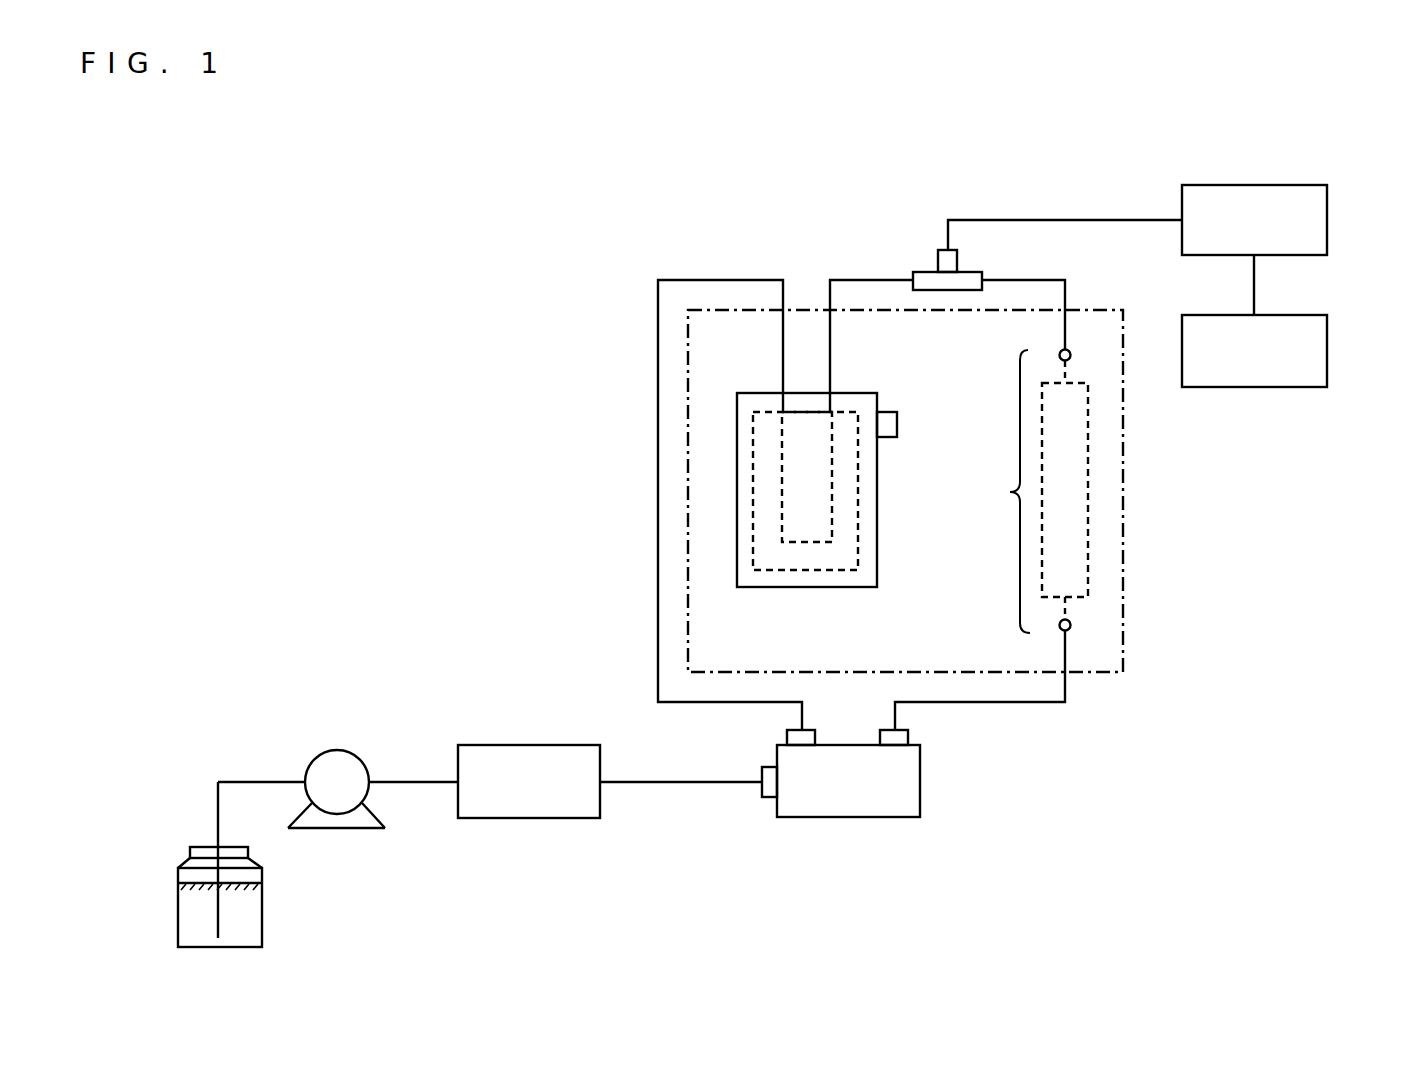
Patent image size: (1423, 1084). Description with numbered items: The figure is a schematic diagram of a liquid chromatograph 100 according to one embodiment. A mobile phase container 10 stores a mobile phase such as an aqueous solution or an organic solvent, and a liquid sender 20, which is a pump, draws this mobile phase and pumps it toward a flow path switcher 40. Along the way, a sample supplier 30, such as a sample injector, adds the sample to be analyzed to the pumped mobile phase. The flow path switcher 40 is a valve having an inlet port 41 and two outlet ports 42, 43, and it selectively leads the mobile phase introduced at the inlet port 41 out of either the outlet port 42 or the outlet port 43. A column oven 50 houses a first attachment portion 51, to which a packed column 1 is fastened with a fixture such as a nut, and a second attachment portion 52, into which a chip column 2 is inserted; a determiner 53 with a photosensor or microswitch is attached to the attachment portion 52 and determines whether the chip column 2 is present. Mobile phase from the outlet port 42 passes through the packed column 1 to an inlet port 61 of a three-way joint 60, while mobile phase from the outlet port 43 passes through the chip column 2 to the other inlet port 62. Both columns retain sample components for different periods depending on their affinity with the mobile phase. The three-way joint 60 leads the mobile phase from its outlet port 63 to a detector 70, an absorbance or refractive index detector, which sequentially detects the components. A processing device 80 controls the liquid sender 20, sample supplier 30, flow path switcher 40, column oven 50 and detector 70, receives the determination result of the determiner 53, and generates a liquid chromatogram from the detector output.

The liquid chromatograph 100 is at (1384, 140).
The mobile phase container 10 is at (262, 908).
The liquid sender 20 is at (337, 750).
The sample supplier 30 is at (520, 745).
The flow path switcher 40 is at (848, 817).
The inlet port 41 is at (762, 778).
The outlet port 42 is at (908, 738).
The outlet port 43 is at (815, 740).
The column oven 50 is at (1123, 492).
The attachment portion 51 is at (1002, 491).
The packed column 1 is at (1050, 508).
The attachment portion 52 is at (807, 587).
The chip column 2 is at (792, 508).
The determiner 53 is at (918, 361).
The three-way joint 60 is at (963, 280).
The inlet port 61 is at (983, 272).
The inlet port 62 is at (913, 272).
The outlet port 63 is at (940, 250).
The detector 70 is at (1250, 185).
The processing device 80 is at (1268, 315).